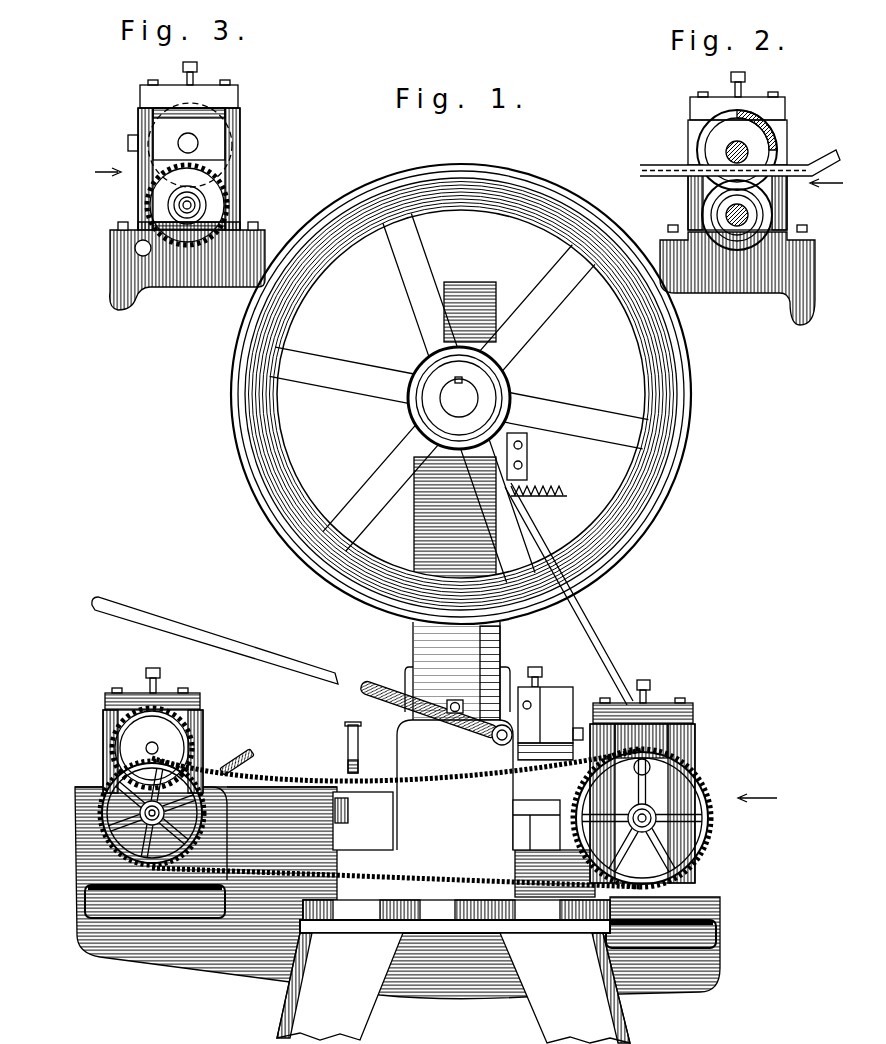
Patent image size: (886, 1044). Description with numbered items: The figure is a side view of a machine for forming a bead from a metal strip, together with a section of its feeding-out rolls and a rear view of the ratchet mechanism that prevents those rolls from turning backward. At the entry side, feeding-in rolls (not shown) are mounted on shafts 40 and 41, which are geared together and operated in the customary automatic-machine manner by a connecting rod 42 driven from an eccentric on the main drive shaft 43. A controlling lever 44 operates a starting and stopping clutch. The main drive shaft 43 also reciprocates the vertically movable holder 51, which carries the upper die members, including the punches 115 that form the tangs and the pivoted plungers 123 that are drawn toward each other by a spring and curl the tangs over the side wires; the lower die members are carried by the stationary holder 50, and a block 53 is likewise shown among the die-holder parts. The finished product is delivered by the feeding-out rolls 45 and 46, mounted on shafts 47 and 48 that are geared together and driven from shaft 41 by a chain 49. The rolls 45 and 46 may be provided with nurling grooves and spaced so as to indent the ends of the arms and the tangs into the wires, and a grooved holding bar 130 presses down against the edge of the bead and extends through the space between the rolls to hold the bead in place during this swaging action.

In FIG. 1, the feeding-in roll shaft 40 is at (657, 763).
In FIG. 1, the feeding-in roll shaft 41 is at (655, 826).
In FIG. 1, the connecting rod 42 is at (592, 632).
In FIG. 1, the main drive shaft 43 is at (468, 392).
In FIG. 1, the controlling lever 44 is at (210, 640).
In FIG. 2, the feeding-out roll 45 is at (760, 145).
In FIG. 2, the feeding-out roll 46 is at (790, 210).
In FIG. 3, the feeding-out roll shaft 47 is at (198, 143).
In FIG. 2, the feeding-out roll shaft 47 is at (725, 150).
In FIG. 1, the feeding-out roll shaft 47 is at (150, 748).
In FIG. 3, the feeding-out roll shaft 48 is at (196, 205).
In FIG. 2, the feeding-out roll shaft 48 is at (725, 215).
In FIG. 1, the feeding-out roll shaft 48 is at (140, 812).
In FIG. 1, the chain 49 is at (438, 878).
In FIG. 1, the stationary holder 50 is at (363, 821).
In FIG. 1, the vertically movable holder 51 is at (553, 710).
In FIG. 1, the block 53 is at (527, 812).
In FIG. 1, the punch 115 is at (553, 758).
In FIG. 1, the plunger 123 is at (347, 757).
In FIG. 2, the grooved holding bar 130 is at (822, 160).
In FIG. 1, the grooved holding bar 130 is at (242, 757).